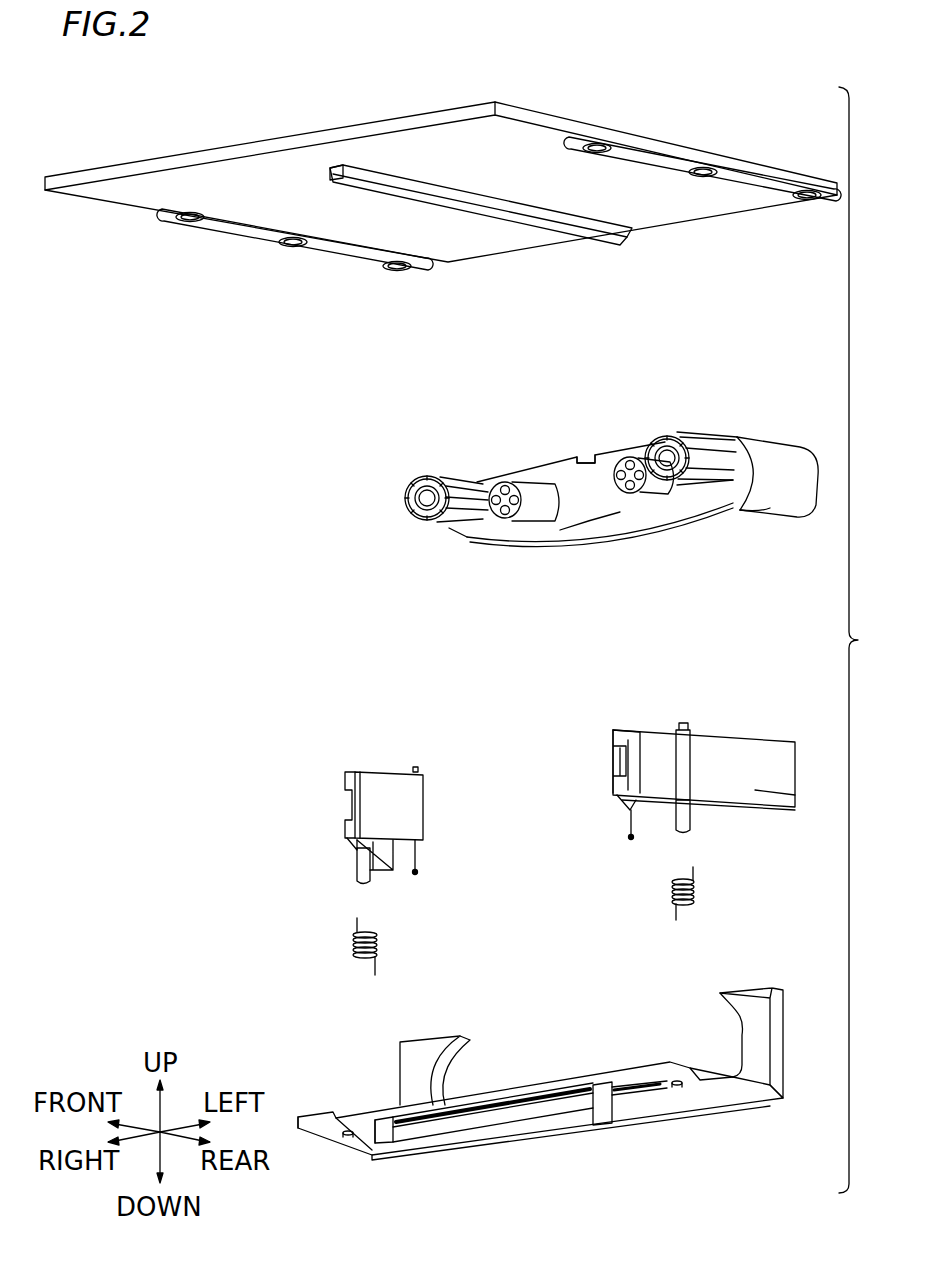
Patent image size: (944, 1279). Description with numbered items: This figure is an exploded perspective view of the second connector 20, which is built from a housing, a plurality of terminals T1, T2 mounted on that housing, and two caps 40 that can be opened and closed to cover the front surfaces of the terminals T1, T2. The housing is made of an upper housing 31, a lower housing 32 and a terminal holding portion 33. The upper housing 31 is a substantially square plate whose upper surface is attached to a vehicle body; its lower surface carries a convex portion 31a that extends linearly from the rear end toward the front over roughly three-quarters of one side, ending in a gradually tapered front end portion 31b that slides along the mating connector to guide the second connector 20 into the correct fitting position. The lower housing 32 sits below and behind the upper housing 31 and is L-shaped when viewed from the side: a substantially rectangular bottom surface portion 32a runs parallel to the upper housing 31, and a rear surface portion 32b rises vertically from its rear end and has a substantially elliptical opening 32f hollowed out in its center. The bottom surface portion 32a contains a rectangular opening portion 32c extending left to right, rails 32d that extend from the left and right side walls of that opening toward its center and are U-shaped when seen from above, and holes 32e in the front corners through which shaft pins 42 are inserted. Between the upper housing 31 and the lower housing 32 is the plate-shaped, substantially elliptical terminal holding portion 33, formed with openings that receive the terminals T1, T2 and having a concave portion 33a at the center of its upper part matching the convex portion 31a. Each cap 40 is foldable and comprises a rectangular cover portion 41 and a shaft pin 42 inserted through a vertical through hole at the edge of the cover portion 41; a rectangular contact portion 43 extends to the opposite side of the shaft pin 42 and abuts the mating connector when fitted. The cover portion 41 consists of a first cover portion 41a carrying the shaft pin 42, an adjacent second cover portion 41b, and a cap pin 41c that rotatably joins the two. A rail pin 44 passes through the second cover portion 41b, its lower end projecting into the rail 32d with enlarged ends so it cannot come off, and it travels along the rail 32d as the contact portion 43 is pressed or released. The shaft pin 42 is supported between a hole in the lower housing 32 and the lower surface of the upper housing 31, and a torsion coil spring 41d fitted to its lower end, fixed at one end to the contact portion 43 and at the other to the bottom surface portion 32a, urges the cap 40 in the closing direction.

The second connector 20 is at (865, 640).
The upper housing 31 is at (527, 117).
The convex portion 31a is at (513, 224).
The front end portion 31b is at (352, 170).
The terminal holding portion 33 is at (611, 487).
The concave portion 33a is at (590, 450).
The terminal T1 is at (462, 490).
The terminal T2 is at (530, 522).
The cap 40 is at (522, 813).
The cover portion 41 is at (655, 755).
The first cover portion 41a is at (355, 841).
The second cover portion 41b is at (388, 790).
The cap pin 41c is at (352, 845).
The torsion coil spring 41d is at (355, 945).
The shaft pin 42 is at (360, 873).
The contact portion 43 is at (393, 853).
The rail pin 44 is at (420, 852).
The lower housing 32 is at (549, 1077).
The bottom surface portion 32a is at (723, 1082).
The rear surface portion 32b is at (751, 1007).
The opening portion 32c is at (638, 1096).
The rail 32d is at (480, 1116).
The hole 32e is at (350, 1136).
The opening 32f is at (462, 1052).